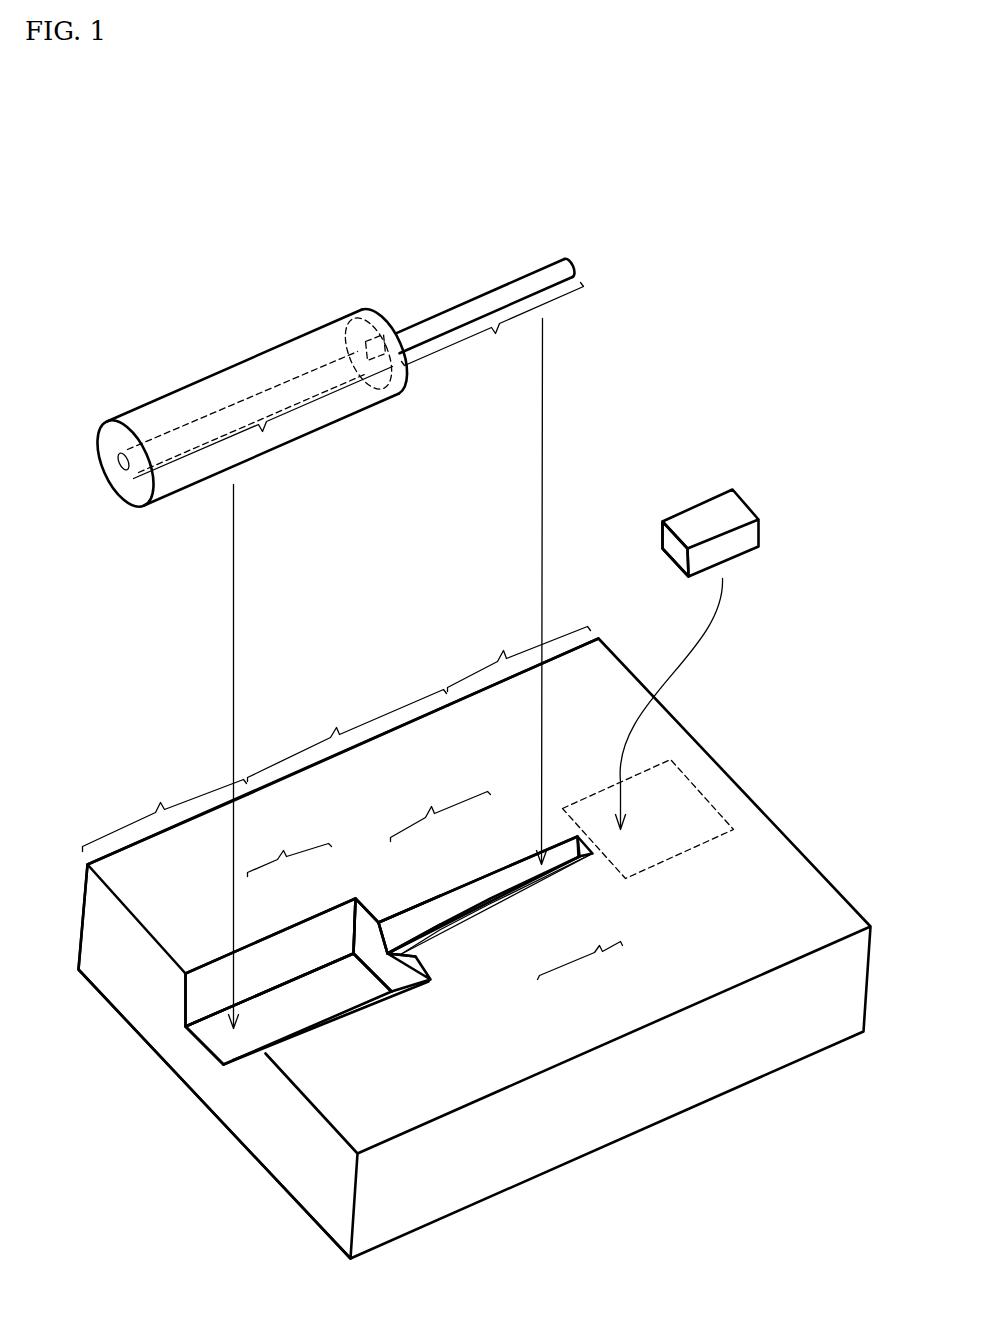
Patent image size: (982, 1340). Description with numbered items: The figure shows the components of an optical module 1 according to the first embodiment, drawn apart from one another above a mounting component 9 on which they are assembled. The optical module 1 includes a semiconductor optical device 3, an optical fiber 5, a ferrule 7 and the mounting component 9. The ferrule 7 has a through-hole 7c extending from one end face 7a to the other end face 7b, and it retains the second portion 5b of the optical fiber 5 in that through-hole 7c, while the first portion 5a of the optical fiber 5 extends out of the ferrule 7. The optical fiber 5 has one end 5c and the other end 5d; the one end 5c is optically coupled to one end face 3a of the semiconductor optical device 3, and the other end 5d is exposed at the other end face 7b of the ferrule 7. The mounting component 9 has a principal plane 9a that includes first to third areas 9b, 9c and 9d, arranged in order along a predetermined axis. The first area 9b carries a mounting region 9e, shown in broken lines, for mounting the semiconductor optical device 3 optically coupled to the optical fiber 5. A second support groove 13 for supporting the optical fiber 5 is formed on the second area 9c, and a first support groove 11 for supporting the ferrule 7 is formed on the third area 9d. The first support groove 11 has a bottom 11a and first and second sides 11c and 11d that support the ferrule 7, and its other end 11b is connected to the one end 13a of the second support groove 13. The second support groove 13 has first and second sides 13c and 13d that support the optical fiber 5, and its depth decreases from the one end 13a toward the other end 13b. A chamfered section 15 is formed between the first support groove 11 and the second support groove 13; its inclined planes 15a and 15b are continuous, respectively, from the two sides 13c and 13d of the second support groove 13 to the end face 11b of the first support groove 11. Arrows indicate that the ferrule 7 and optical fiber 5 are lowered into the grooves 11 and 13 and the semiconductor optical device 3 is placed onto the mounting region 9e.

The optical module 1 is at (704, 158).
The semiconductor optical device 3 is at (700, 500).
The one end face of the semiconductor optical device 3a is at (672, 541).
The optical fiber 5 is at (468, 300).
The first portion of the optical fiber 5a is at (495, 333).
The second portion of the optical fiber 5b is at (262, 430).
The one end of the optical fiber 5c is at (578, 250).
The other end of the optical fiber 5d is at (120, 463).
The ferrule 7 is at (293, 337).
The one end face of the ferrule 7a is at (384, 315).
The other end face of the ferrule 7b is at (137, 497).
The through-hole 7c is at (197, 418).
The mounting component 9 is at (730, 1090).
The principal plane 9a is at (170, 917).
The first area 9b is at (523, 666).
The second area 9c is at (348, 742).
The third area 9d is at (165, 821).
The mounting region 9e is at (695, 775).
The first support groove 11 is at (289, 945).
The groove bottom surface 11a is at (268, 1022).
The other end of the first support groove 11b is at (397, 975).
The first side of the first support groove 11c is at (292, 947).
The second side of the first support groove 11d is at (342, 1010).
The second support groove 13 is at (486, 867).
The one end of the second support groove 13a is at (398, 970).
The other end of the second support groove 13b is at (590, 838).
The first side of the second support groove 13c is at (442, 902).
The second side of the second support groove 13d is at (489, 895).
The chamfered section 15 is at (581, 967).
The inclined plane 15a is at (378, 921).
The inclined plane 15b is at (387, 952).